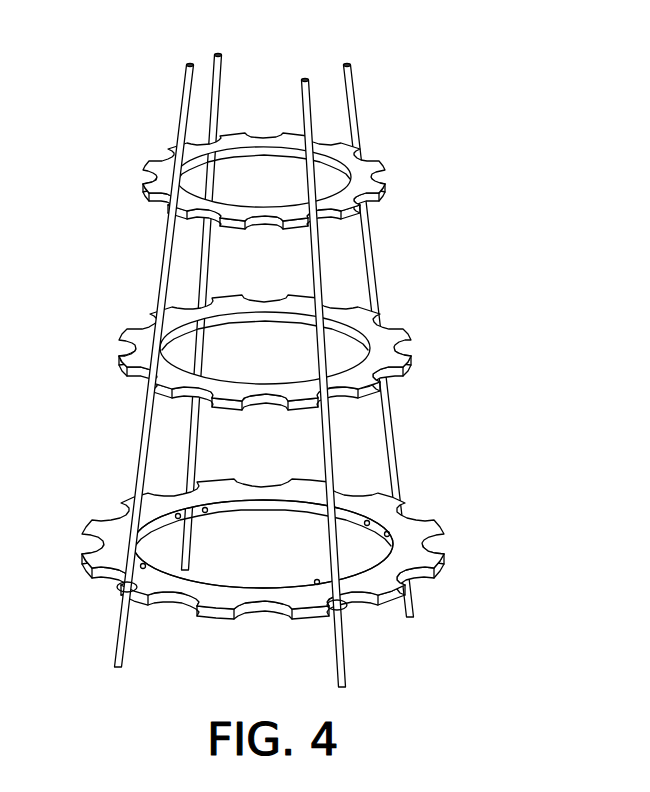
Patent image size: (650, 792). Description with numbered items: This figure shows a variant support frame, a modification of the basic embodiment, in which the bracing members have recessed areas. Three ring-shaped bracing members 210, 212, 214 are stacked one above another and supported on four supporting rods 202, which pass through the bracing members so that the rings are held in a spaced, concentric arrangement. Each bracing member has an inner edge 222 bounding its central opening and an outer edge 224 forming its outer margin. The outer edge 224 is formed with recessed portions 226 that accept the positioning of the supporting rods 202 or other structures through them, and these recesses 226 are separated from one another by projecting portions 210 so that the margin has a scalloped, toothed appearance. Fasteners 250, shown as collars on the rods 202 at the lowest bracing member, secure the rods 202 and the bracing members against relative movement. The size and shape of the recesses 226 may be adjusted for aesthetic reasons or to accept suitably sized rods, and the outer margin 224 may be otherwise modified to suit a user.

The rods 202 is at (352, 70).
The projecting portions 210 is at (437, 519).
The bracing member 212 is at (393, 330).
The bracing member 214 is at (386, 194).
The inner edge 222 is at (240, 590).
The outer edge 224 is at (231, 621).
The recessed portions 226 is at (263, 133).
The fasteners 250 is at (344, 610).